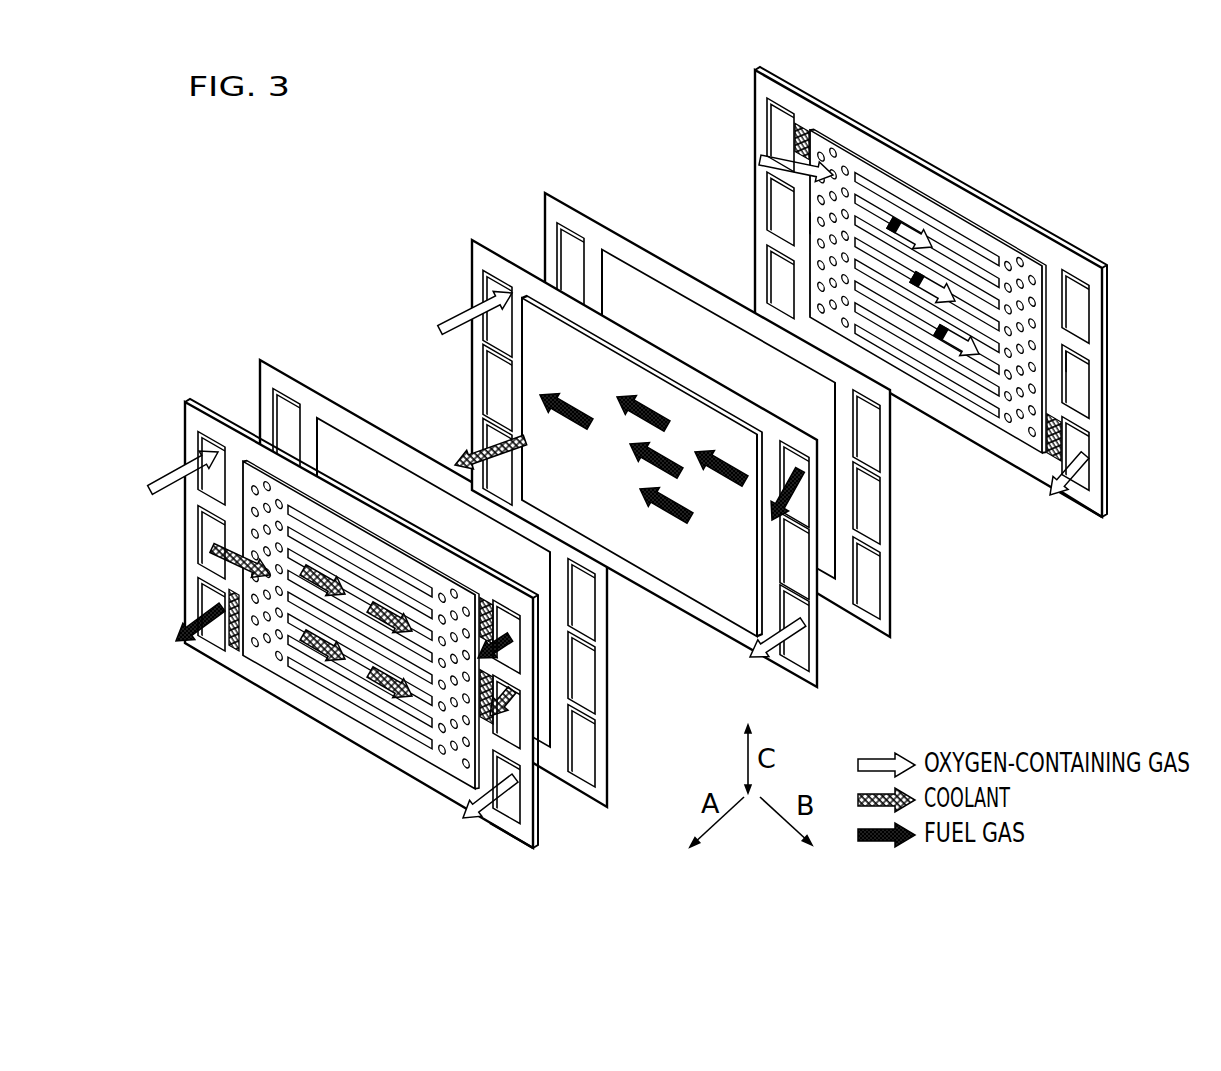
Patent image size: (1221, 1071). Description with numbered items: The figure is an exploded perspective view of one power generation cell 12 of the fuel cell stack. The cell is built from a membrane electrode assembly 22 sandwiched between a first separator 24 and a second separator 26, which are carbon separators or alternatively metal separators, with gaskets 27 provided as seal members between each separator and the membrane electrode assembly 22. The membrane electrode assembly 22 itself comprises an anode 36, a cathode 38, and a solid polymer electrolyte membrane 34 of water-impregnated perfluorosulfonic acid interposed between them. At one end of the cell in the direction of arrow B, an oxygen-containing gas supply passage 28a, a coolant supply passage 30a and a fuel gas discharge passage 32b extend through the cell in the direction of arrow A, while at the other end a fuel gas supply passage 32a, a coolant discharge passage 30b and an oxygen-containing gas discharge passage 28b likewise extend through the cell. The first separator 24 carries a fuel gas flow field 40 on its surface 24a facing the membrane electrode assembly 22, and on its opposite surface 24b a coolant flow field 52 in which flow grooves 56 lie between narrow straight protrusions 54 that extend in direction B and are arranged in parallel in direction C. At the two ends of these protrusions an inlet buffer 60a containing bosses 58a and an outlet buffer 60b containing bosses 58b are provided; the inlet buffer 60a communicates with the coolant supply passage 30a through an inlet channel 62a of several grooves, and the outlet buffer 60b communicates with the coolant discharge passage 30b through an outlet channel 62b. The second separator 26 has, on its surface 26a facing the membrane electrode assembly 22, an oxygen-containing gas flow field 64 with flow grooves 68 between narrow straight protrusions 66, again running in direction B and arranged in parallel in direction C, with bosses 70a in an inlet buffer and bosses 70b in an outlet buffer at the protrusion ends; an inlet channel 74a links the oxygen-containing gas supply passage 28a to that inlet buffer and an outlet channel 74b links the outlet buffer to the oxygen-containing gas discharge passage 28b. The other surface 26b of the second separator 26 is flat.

The power generation cell 12 is at (258, 250).
The membrane electrode assembly 22 is at (609, 457).
The first separator 24 is at (355, 611).
The surface of first separator 24a is at (540, 827).
The surface of first separator 24b is at (507, 823).
The second separator 26 is at (930, 278).
The surface of second separator 26a is at (1080, 490).
The surface of second separator 26b is at (1110, 497).
The gasket 27 is at (607, 237).
The oxygen-containing gas supply passage 28a is at (200, 468).
The oxygen-containing gas discharge passage 28b is at (510, 767).
The coolant supply passage 30a is at (210, 523).
The coolant discharge passage 30b is at (513, 693).
The fuel gas supply passage 32a is at (513, 620).
The fuel gas discharge passage 32b is at (202, 598).
The solid polymer electrolyte membrane 34 is at (810, 667).
The anode 36 is at (639, 467).
The cathode 38 is at (642, 466).
The fuel gas flow field 40 is at (361, 624).
The coolant flow field 52 is at (360, 627).
The narrow straight protrusions 54 is at (360, 681).
The flow grooves 56 is at (360, 703).
The bosses 58a is at (267, 567).
The bosses 58b is at (454, 675).
The inlet buffer 60a is at (234, 620).
The outlet buffer 60b is at (486, 697).
The inlet channel 62a is at (240, 561).
The outlet channel 62b is at (486, 621).
The oxygen-containing gas flow field 64 is at (928, 291).
The narrow straight protrusions 66 is at (927, 370).
The flow grooves 68 is at (927, 349).
The bosses 70a is at (833, 234).
The bosses 70b is at (1020, 343).
The inlet channel 74a is at (802, 141).
The outlet channel 74b is at (1054, 437).